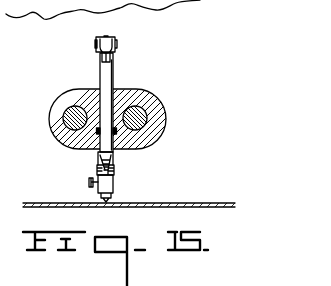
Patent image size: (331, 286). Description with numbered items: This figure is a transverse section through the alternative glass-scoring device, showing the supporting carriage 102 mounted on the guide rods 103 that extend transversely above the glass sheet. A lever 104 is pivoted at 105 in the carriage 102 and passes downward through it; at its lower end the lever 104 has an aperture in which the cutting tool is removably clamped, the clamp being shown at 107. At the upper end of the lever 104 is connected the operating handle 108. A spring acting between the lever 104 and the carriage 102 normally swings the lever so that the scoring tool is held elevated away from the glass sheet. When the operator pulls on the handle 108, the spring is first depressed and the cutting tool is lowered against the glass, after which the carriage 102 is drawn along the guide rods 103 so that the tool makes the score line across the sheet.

The supporting carriage 102 is at (146, 94).
The guide rods 103 is at (149, 117).
The lever 104 is at (103, 85).
The pivot 105 is at (118, 131).
The clamp 107 is at (92, 182).
The operating handle 108 is at (107, 37).